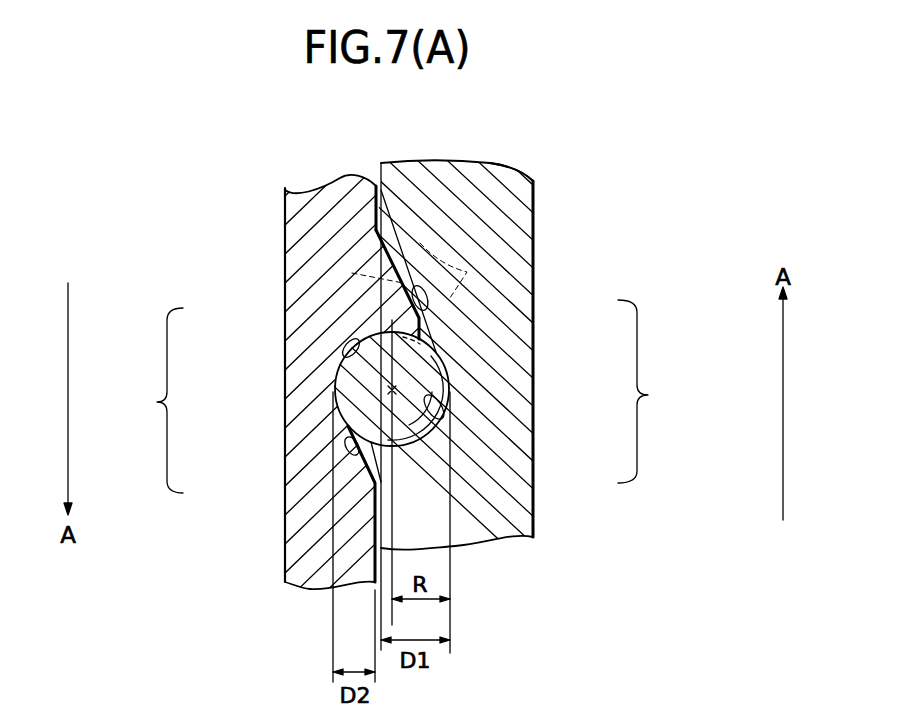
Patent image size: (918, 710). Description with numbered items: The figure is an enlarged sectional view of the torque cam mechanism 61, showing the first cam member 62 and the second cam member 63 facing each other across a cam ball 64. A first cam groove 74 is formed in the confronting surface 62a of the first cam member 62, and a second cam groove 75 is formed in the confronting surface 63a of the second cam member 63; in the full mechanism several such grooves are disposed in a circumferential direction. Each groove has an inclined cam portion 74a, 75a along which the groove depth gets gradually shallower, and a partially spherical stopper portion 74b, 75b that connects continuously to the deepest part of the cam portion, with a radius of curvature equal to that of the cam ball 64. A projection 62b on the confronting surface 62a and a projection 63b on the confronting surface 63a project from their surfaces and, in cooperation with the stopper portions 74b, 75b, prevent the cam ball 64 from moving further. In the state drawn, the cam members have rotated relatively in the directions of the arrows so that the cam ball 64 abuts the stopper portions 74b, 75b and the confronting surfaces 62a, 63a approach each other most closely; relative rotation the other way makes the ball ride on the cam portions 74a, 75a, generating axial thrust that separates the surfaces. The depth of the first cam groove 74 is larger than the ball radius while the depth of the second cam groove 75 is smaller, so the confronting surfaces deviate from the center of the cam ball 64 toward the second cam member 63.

The torque cam mechanism 61 is at (511, 152).
The first cam member 62 is at (545, 203).
The confronting surface of the first cam member 62a is at (377, 186).
The projection 62b is at (350, 445).
The second cam member 63 is at (275, 257).
The confronting surface of the second cam member 63a is at (382, 197).
The projection 63b is at (405, 248).
The cam ball 64 is at (369, 398).
The first cam groove 74 is at (651, 391).
The cam portion of the first cam groove 74a is at (428, 312).
The stopper portion of the first cam groove 74b is at (442, 405).
The second cam groove 75 is at (152, 400).
The cam portion of the second cam groove 75a is at (350, 452).
The stopper portion of the second cam groove 75b is at (348, 352).